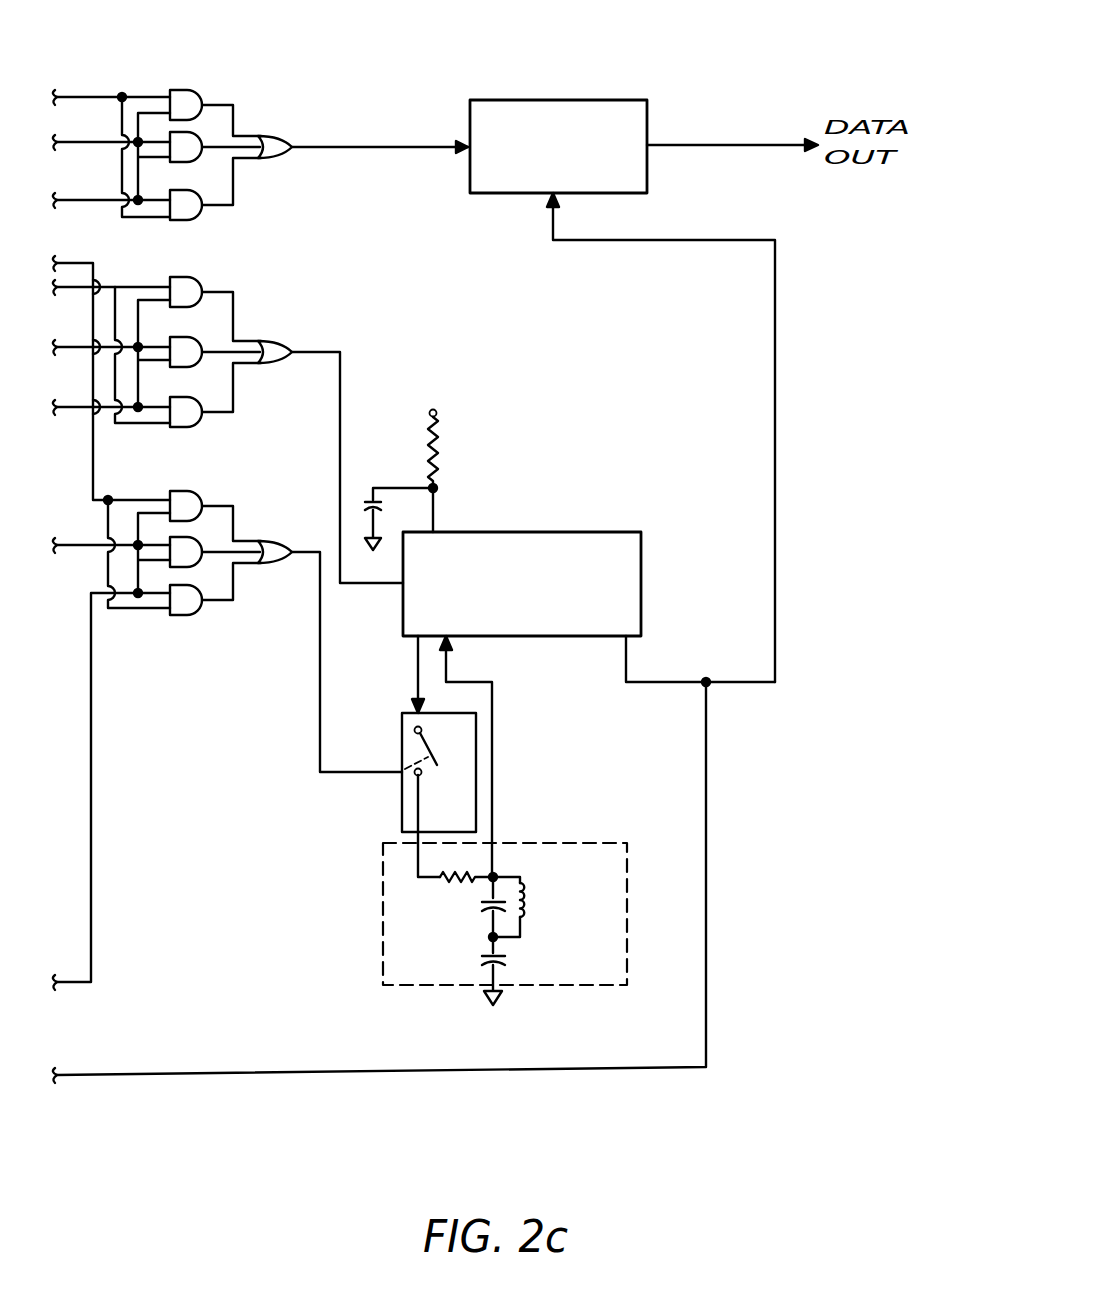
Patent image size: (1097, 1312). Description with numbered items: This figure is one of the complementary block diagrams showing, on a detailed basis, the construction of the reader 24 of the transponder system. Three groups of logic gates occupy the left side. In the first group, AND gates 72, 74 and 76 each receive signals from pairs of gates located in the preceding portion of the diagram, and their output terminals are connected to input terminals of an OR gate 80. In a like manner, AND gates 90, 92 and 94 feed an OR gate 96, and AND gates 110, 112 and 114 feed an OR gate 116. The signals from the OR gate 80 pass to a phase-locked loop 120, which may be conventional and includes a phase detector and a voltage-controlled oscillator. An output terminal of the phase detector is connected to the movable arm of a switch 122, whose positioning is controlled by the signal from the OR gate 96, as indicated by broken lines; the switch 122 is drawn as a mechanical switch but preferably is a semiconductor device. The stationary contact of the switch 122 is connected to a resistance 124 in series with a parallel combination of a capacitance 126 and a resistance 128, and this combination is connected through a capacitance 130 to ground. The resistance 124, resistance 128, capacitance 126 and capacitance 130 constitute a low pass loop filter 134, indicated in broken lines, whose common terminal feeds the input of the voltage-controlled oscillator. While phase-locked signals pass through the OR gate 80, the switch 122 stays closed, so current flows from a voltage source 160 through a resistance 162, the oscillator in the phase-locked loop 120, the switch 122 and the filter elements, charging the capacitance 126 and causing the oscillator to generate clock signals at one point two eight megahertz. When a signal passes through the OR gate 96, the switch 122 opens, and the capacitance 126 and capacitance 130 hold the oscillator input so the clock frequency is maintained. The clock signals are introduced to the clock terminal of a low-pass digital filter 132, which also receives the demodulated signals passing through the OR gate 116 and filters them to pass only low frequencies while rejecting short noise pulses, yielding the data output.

The decoder circuit 24 is at (700, 76).
The AND gate 72 is at (186, 278).
The AND gate 74 is at (185, 427).
The AND gate 76 is at (178, 367).
The OR gate 80 is at (273, 340).
The AND gate 90 is at (186, 491).
The AND gate 92 is at (185, 615).
The AND gate 94 is at (185, 537).
The OR gate 96 is at (273, 540).
The AND gate 110 is at (186, 90).
The AND gate 112 is at (185, 220).
The AND gate 114 is at (172, 162).
The OR gate 116 is at (273, 135).
The phase-locked loop 120 is at (545, 532).
The switch 122 is at (449, 739).
The resistance 124 is at (461, 863).
The capacitance 126 is at (480, 898).
The resistance 128 is at (527, 895).
The capacitance 130 is at (507, 957).
The low-pass digital filter 132 is at (545, 100).
The low pass loop filter 134 is at (600, 843).
The voltage source 160 is at (436, 410).
The resistance 162 is at (437, 468).